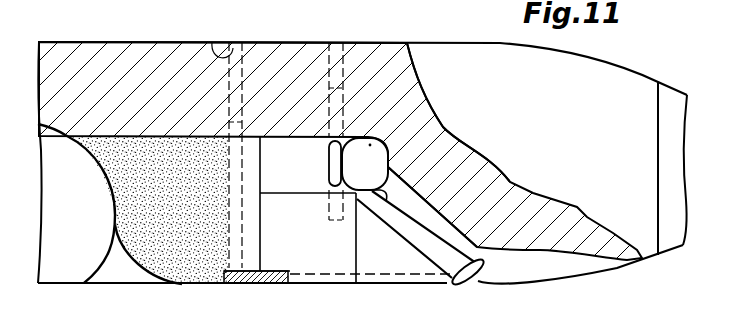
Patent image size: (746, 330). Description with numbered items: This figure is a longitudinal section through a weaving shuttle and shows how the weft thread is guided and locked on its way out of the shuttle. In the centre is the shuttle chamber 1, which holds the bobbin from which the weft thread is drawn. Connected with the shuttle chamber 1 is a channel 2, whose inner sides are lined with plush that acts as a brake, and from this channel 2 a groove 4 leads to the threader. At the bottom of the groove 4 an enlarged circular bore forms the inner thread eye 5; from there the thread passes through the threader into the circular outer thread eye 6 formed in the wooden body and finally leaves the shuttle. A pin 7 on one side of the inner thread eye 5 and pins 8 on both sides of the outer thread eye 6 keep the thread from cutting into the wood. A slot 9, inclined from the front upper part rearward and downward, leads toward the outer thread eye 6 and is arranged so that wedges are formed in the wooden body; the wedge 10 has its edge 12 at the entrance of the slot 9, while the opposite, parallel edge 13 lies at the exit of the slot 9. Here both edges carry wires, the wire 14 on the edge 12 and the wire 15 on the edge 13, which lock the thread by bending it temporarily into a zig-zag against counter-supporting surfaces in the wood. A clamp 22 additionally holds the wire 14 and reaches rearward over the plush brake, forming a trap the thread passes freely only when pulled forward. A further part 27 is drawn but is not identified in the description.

The shuttle chamber 1 is at (58, 213).
The channel 2 is at (147, 209).
The groove 4 is at (312, 237).
The inner thread eye 5 is at (288, 176).
The outer thread eye 6 is at (400, 116).
The pin 7 is at (329, 168).
The pins 8 is at (389, 163).
The slot 9 is at (398, 228).
The wedge 10 is at (362, 142).
The edge 12 is at (463, 279).
The edge 13 is at (383, 199).
The wire 14 is at (338, 276).
The wire 15 is at (357, 191).
The clamp 22 is at (247, 287).
The passage 27 is at (213, 42).